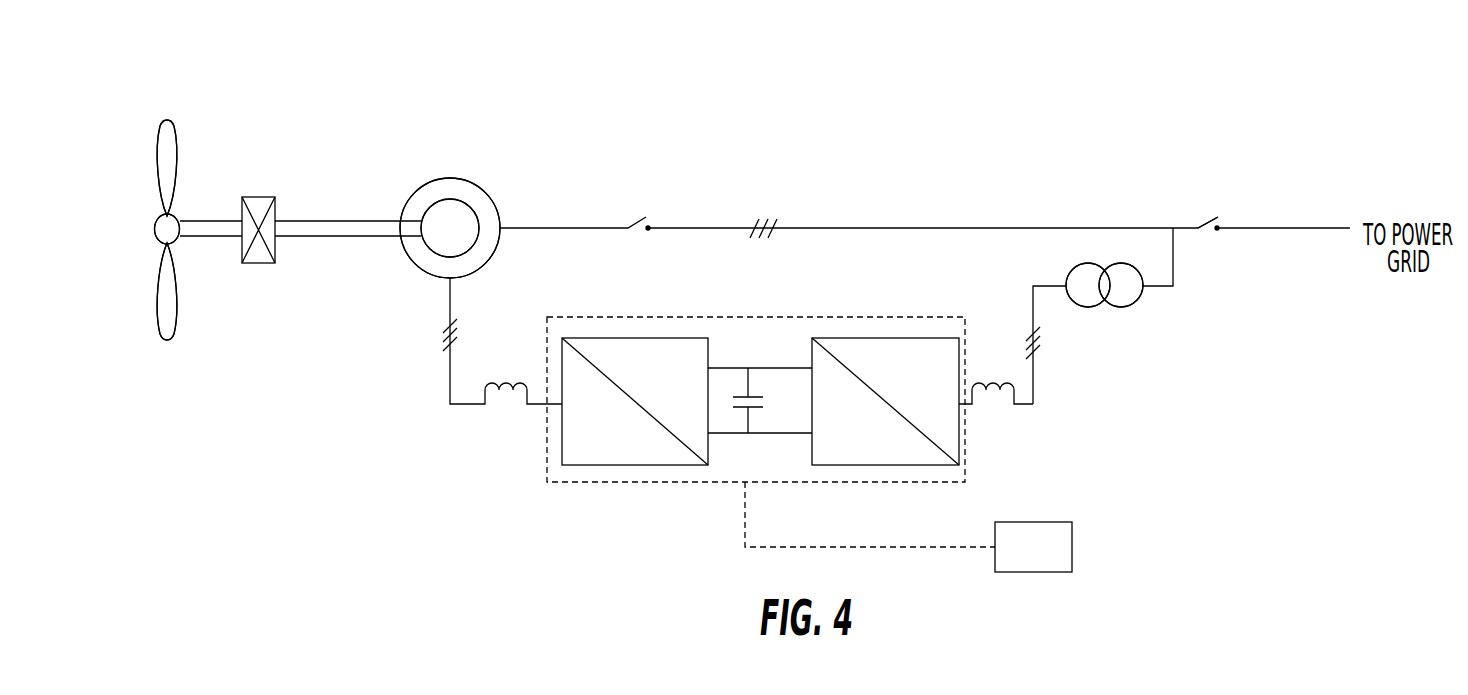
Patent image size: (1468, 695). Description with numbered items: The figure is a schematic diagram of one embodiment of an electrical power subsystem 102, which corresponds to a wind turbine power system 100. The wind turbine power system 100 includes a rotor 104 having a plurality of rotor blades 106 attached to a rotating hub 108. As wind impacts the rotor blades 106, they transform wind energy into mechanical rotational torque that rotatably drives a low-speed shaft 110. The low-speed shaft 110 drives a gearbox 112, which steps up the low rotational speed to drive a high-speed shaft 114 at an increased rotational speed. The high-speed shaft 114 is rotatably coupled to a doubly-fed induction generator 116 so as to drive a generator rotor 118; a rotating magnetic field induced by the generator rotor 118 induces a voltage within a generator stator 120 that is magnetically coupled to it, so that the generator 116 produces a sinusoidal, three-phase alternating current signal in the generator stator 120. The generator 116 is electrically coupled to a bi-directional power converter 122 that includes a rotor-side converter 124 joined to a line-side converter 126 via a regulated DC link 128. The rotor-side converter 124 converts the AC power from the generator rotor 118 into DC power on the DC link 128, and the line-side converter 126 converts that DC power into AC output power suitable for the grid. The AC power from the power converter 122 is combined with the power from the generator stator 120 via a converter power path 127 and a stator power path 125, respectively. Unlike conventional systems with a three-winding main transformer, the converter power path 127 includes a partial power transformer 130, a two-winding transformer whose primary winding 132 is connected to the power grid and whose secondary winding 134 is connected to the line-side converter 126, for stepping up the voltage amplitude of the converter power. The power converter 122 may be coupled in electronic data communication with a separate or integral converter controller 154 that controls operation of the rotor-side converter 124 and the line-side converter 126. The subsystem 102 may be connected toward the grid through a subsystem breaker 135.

The wind turbine power system 100 is at (186, 84).
The electrical power subsystem 102 is at (1102, 105).
The rotor 104 is at (137, 219).
The rotor blades 106 is at (170, 154).
The rotating hub 108 is at (160, 246).
The low-speed shaft 110 is at (196, 232).
The gearbox 112 is at (257, 197).
The high-speed shaft 114 is at (329, 234).
The doubly-fed induction generator 116 is at (477, 173).
The generator rotor 118 is at (425, 254).
The generator stator 120 is at (412, 194).
The bi-directional power converter 122 is at (693, 486).
The rotor-side converter 124 is at (628, 338).
The stator power path 125 is at (822, 228).
The line-side converter 126 is at (876, 338).
The converter power path 127 is at (1037, 378).
The regulated DC link 128 is at (757, 362).
The partial power transformer 130 is at (1128, 316).
The primary winding 132 is at (1141, 275).
The secondary winding 134 is at (1075, 267).
The subsystem breaker 135 is at (1229, 220).
The converter controller 154 is at (1050, 558).